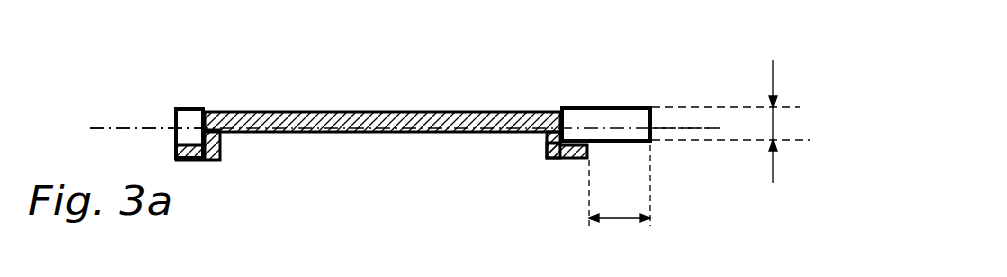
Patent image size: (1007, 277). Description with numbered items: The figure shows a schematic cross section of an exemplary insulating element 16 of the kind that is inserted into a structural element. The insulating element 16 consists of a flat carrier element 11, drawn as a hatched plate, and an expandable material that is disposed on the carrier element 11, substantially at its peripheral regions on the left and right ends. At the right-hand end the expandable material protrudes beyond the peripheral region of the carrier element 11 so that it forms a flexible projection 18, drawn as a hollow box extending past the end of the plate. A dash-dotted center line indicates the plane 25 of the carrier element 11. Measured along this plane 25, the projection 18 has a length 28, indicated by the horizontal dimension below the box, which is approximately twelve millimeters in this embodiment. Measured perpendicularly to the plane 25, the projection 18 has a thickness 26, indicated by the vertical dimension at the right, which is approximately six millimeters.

The carrier element 11 is at (400, 133).
The insulating element 16 is at (400, 58).
The flexible projection 18 is at (615, 120).
The plane 25 is at (92, 128).
The thickness 26 is at (731, 121).
The length 28 is at (619, 185).